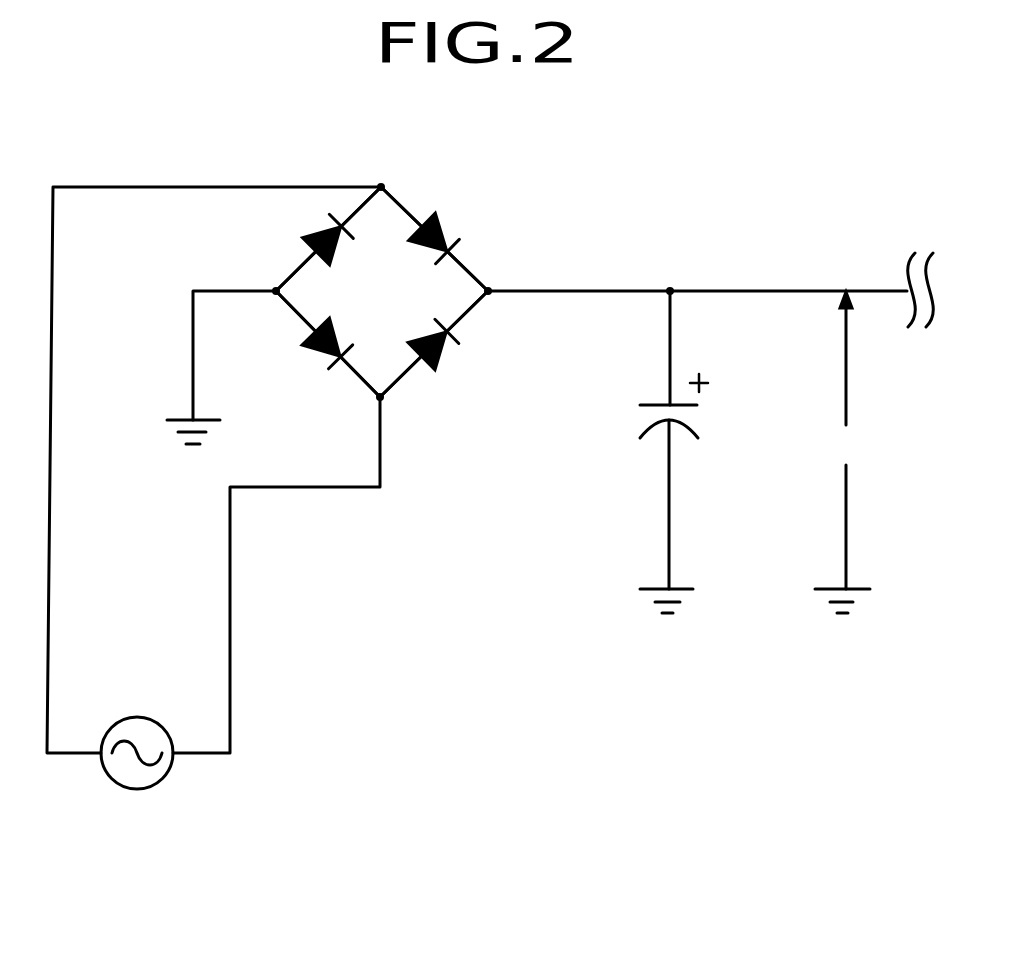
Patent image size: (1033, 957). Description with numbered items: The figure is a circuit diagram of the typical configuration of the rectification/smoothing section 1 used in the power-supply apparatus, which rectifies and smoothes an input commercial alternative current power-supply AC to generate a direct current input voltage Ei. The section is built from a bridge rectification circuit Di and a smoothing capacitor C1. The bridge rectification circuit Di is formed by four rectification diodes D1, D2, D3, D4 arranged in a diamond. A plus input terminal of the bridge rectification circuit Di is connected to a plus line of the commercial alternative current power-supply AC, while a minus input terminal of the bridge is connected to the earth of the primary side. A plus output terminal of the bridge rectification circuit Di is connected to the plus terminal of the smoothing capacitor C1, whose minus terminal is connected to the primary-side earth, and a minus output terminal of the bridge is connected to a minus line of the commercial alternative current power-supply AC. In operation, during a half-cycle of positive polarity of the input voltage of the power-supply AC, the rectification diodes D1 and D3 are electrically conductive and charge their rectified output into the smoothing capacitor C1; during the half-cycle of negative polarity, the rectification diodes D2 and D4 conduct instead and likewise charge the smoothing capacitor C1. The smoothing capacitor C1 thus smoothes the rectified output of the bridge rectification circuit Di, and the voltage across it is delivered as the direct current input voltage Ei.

The rectification diode D1 is at (315, 234).
The rectification diode D2 is at (450, 233).
The rectification diode D3 is at (315, 357).
The rectification diode D4 is at (449, 358).
The bridge rectification circuit Di is at (401, 308).
The smoothing capacitor C1 is at (651, 452).
The direct current input voltage Ei is at (842, 452).
The commercial alternative current power-supply AC is at (137, 775).
The rectification/smoothing section 1 is at (447, 927).